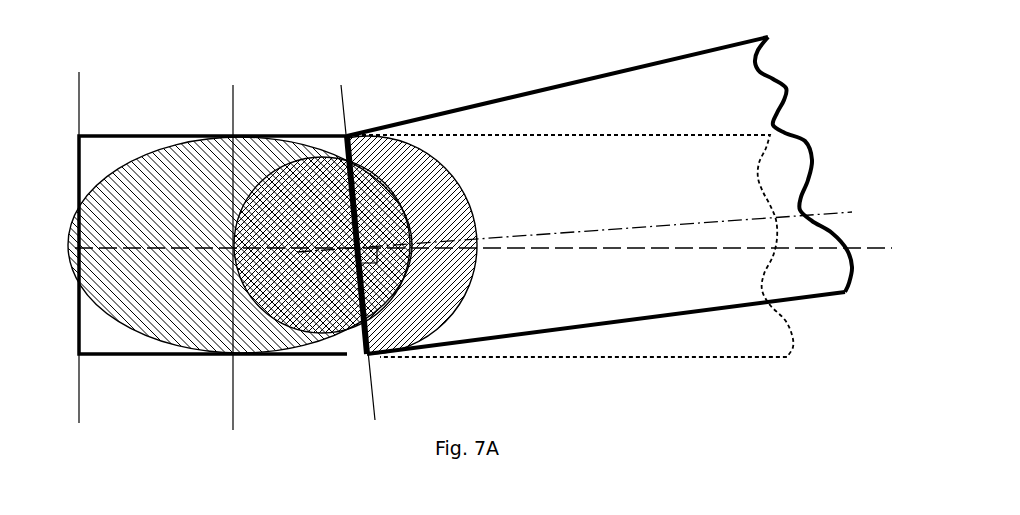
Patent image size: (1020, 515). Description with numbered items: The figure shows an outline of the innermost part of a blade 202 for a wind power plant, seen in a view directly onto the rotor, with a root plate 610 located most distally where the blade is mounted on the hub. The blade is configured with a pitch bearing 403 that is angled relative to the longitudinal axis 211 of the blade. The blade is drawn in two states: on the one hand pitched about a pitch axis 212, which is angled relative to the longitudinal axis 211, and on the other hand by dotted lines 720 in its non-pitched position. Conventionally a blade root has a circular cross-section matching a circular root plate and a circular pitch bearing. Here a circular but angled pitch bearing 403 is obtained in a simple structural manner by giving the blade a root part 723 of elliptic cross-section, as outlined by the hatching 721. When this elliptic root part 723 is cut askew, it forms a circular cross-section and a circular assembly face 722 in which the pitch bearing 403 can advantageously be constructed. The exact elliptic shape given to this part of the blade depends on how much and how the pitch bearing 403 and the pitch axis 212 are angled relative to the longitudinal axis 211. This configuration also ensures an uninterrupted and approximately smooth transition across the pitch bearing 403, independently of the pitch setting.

The blade 202 is at (512, 87).
The longitudinal axis 211 is at (797, 250).
The pitch axis 212 is at (718, 221).
The pitch bearing 403 is at (378, 356).
The root plate 610 is at (78, 337).
The dotted lines 720 is at (580, 357).
The hatching 721 is at (248, 148).
The circular assembly face 722 is at (383, 148).
The root part 723 is at (303, 345).